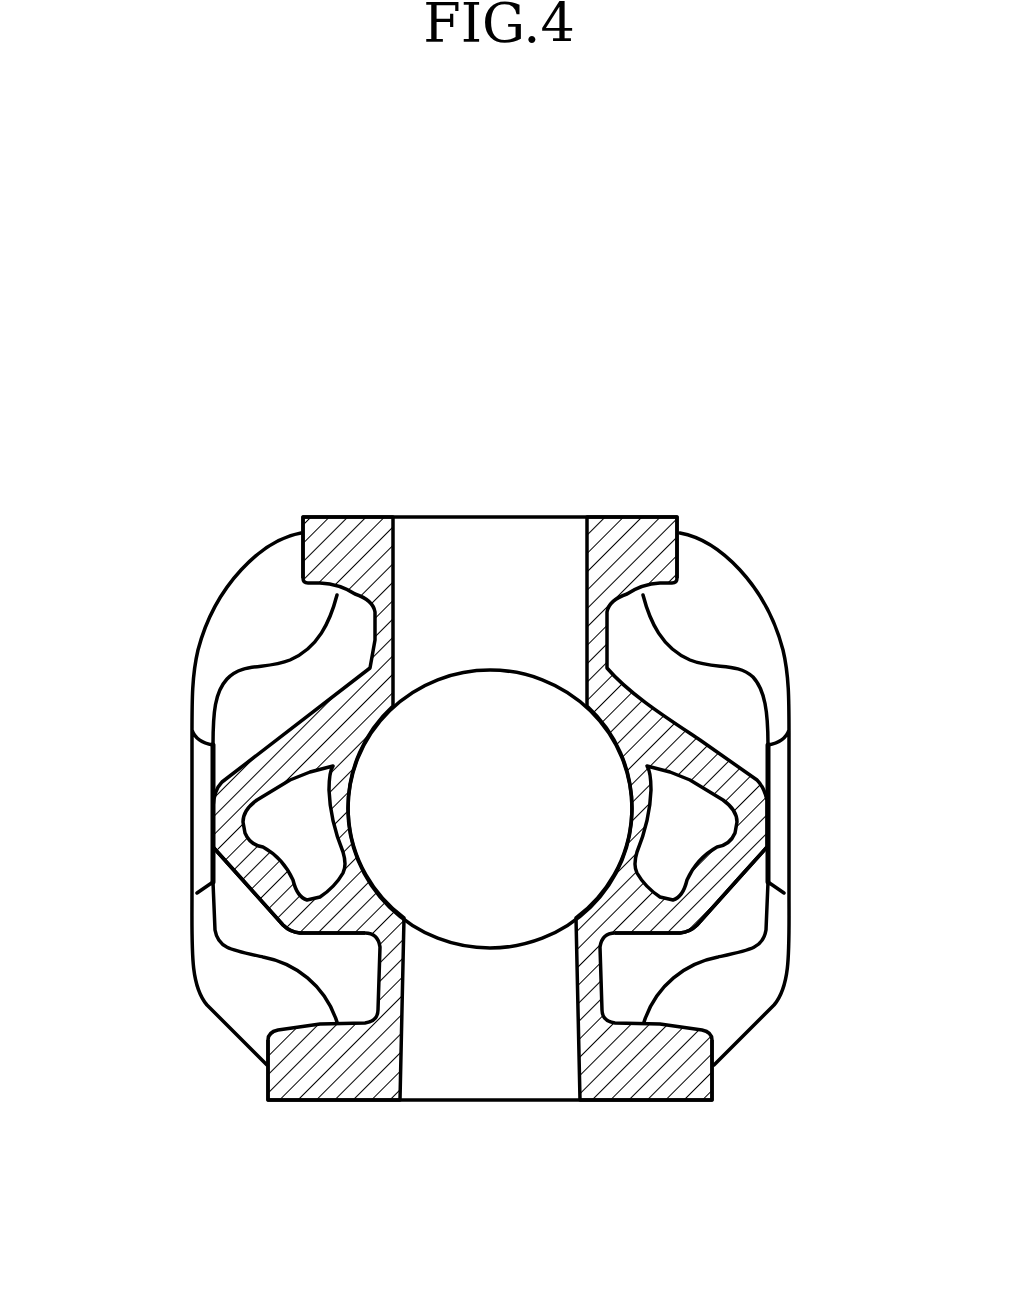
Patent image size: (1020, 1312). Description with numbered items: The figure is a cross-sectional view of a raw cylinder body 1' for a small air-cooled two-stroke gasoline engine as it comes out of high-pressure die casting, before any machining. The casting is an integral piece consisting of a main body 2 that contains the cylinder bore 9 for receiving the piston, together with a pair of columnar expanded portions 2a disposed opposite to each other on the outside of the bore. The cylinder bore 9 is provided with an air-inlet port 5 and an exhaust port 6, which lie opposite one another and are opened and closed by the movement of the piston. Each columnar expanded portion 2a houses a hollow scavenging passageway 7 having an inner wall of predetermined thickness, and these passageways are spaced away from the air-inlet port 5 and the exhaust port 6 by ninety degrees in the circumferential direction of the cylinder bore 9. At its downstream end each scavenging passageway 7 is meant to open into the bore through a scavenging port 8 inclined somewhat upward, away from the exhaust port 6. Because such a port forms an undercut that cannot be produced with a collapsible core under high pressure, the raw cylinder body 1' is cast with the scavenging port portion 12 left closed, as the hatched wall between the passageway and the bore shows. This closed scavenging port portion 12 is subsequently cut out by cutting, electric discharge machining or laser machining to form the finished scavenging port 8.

The raw cylinder body 1' is at (490, 730).
The main body 2 is at (636, 687).
The columnar expanded portions 2a is at (215, 850).
The air-inlet port 5 is at (586, 556).
The exhaust port 6 is at (400, 1057).
The scavenging passageway 7 is at (268, 920).
The scavenging port 8 is at (316, 774).
The cylinder bore 9 is at (394, 712).
The scavenging port portion 12 is at (368, 744).